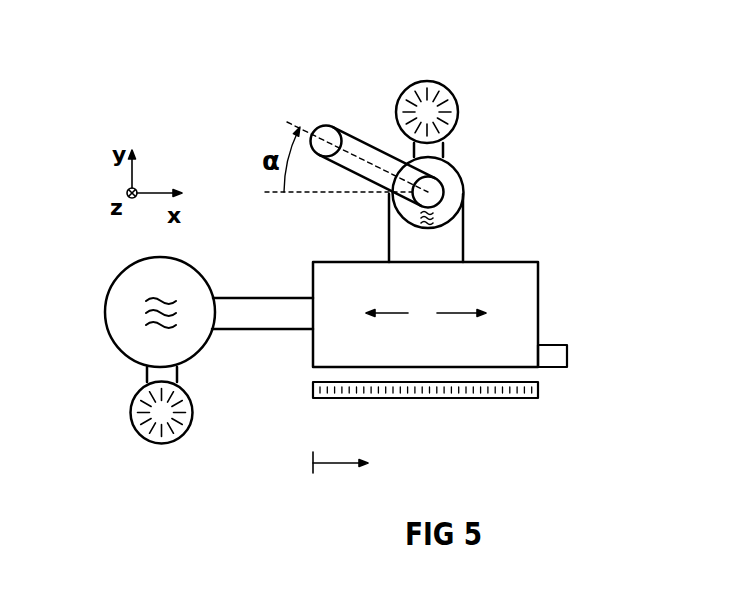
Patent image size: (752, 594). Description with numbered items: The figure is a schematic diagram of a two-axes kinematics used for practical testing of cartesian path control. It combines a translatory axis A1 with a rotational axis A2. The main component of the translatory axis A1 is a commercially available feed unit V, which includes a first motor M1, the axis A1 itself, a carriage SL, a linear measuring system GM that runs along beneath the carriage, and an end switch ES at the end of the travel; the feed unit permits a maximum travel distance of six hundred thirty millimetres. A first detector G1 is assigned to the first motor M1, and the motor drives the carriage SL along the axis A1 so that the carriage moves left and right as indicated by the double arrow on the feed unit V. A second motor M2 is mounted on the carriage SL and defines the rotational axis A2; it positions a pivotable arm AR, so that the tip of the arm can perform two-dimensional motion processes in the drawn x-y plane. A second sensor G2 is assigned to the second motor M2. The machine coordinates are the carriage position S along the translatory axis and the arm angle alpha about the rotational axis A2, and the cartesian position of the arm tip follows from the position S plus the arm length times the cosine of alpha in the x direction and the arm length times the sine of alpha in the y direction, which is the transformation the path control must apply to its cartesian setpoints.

The first motor M1 is at (112, 310).
The first detector G1 is at (130, 413).
The translatory axis A1 is at (264, 321).
The second motor M2 is at (453, 182).
The second sensor G2 is at (430, 81).
The rotational axis A2 is at (414, 205).
The pivotable arm AR is at (360, 145).
The carriage SL is at (452, 248).
The end switch ES is at (560, 355).
The linear measuring system GM is at (473, 400).
The feed unit V is at (426, 313).
The carriage position S is at (340, 453).